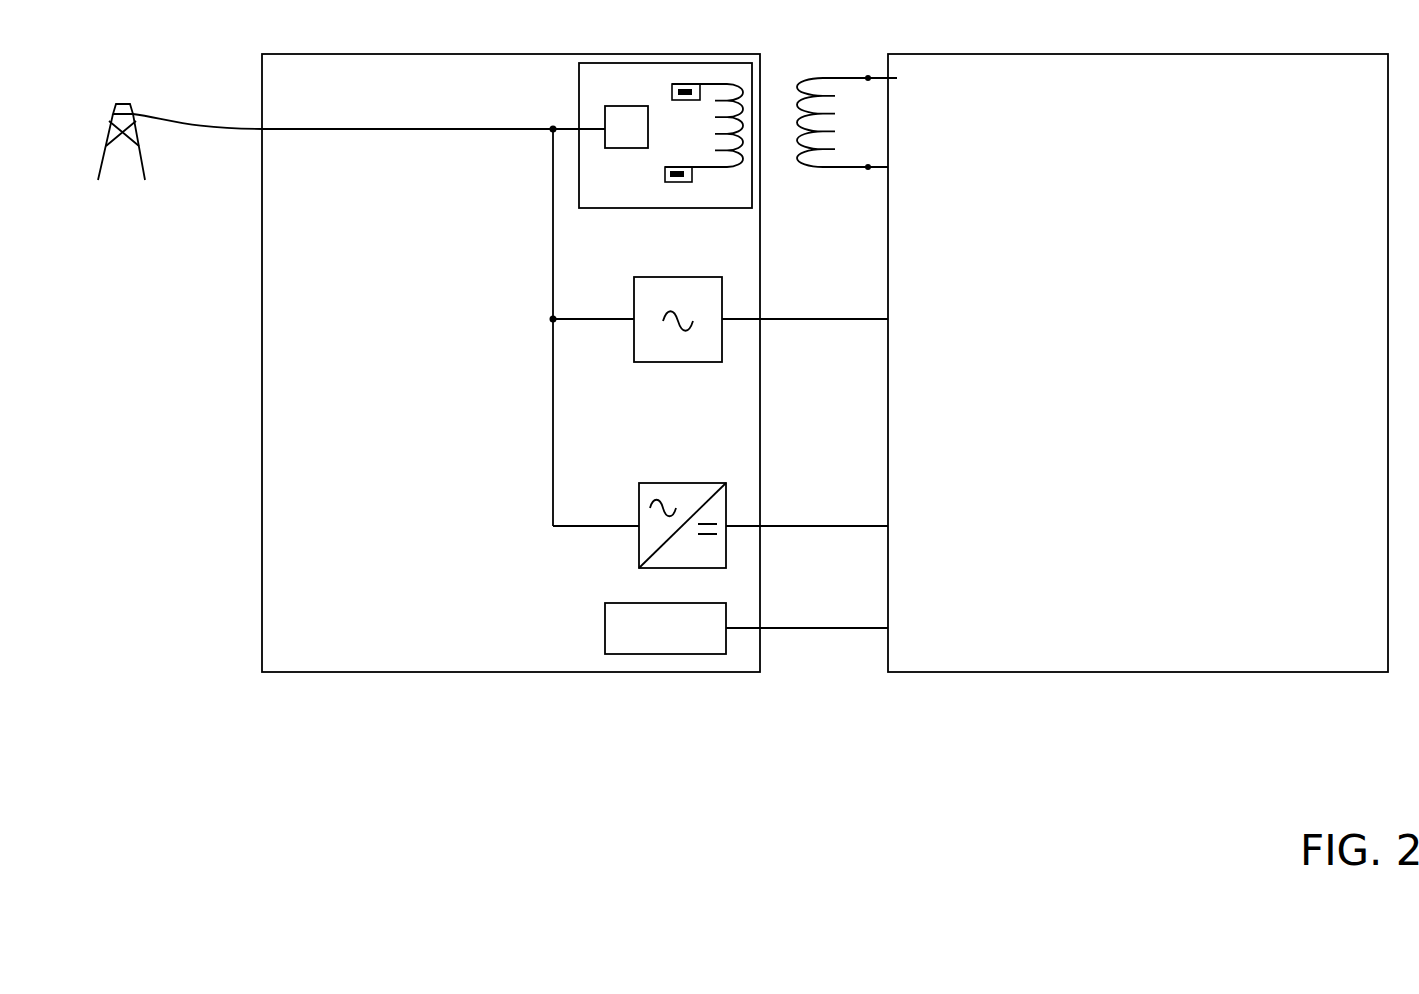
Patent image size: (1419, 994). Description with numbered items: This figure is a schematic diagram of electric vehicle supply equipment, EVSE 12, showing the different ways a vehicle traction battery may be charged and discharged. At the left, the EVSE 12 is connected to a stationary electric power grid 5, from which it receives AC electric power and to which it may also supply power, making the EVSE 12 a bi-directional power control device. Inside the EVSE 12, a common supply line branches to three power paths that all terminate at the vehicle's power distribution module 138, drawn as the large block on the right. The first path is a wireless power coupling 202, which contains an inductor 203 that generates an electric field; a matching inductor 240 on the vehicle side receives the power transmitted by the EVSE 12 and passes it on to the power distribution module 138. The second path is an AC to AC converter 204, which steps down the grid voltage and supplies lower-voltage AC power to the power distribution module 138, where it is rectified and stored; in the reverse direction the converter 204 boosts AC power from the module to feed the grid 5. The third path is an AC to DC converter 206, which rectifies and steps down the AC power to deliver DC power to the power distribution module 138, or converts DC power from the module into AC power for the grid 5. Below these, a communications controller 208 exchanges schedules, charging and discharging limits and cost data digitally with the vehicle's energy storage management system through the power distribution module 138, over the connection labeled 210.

The stationary electric power grid 5 is at (108, 131).
The electric vehicle supply equipment 12 is at (523, 375).
The power distribution module 138 is at (1153, 375).
The wireless power coupling 202 is at (610, 208).
The inductor 203 is at (716, 84).
The AC to AC converter 204 is at (657, 362).
The AC to DC converter 206 is at (640, 483).
The communications controller 208 is at (618, 603).
The communication link 210 is at (788, 628).
The inductor 240 is at (861, 67).